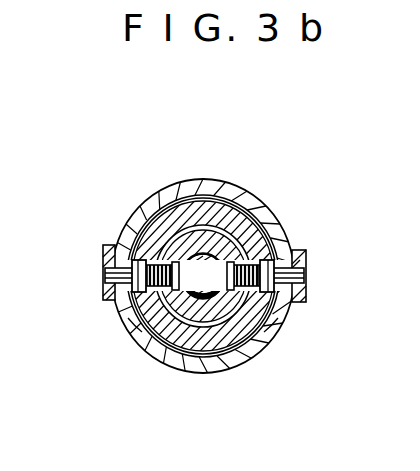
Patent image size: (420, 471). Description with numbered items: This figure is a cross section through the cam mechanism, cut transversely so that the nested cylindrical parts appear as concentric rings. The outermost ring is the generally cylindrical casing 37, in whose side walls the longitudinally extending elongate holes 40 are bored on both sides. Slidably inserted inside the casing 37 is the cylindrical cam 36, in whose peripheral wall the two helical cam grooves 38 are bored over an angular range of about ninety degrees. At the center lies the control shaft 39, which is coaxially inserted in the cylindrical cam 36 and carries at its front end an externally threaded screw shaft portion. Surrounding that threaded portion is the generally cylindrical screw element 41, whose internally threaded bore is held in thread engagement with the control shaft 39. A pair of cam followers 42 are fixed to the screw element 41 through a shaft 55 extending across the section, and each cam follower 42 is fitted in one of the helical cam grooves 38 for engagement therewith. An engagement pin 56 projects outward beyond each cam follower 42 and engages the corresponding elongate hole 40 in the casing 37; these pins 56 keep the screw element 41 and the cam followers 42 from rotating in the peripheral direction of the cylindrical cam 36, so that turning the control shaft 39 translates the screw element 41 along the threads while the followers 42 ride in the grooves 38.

The cylindrical cam 36 is at (283, 222).
The casing 37 is at (198, 182).
The helical cam groove 38 is at (134, 327).
The control shaft 39 is at (205, 298).
The elongate hole 40 is at (107, 279).
The screw element 41 is at (228, 312).
The cam follower 42 is at (103, 272).
The shaft 55 is at (158, 262).
The engagement pin 56 is at (130, 291).